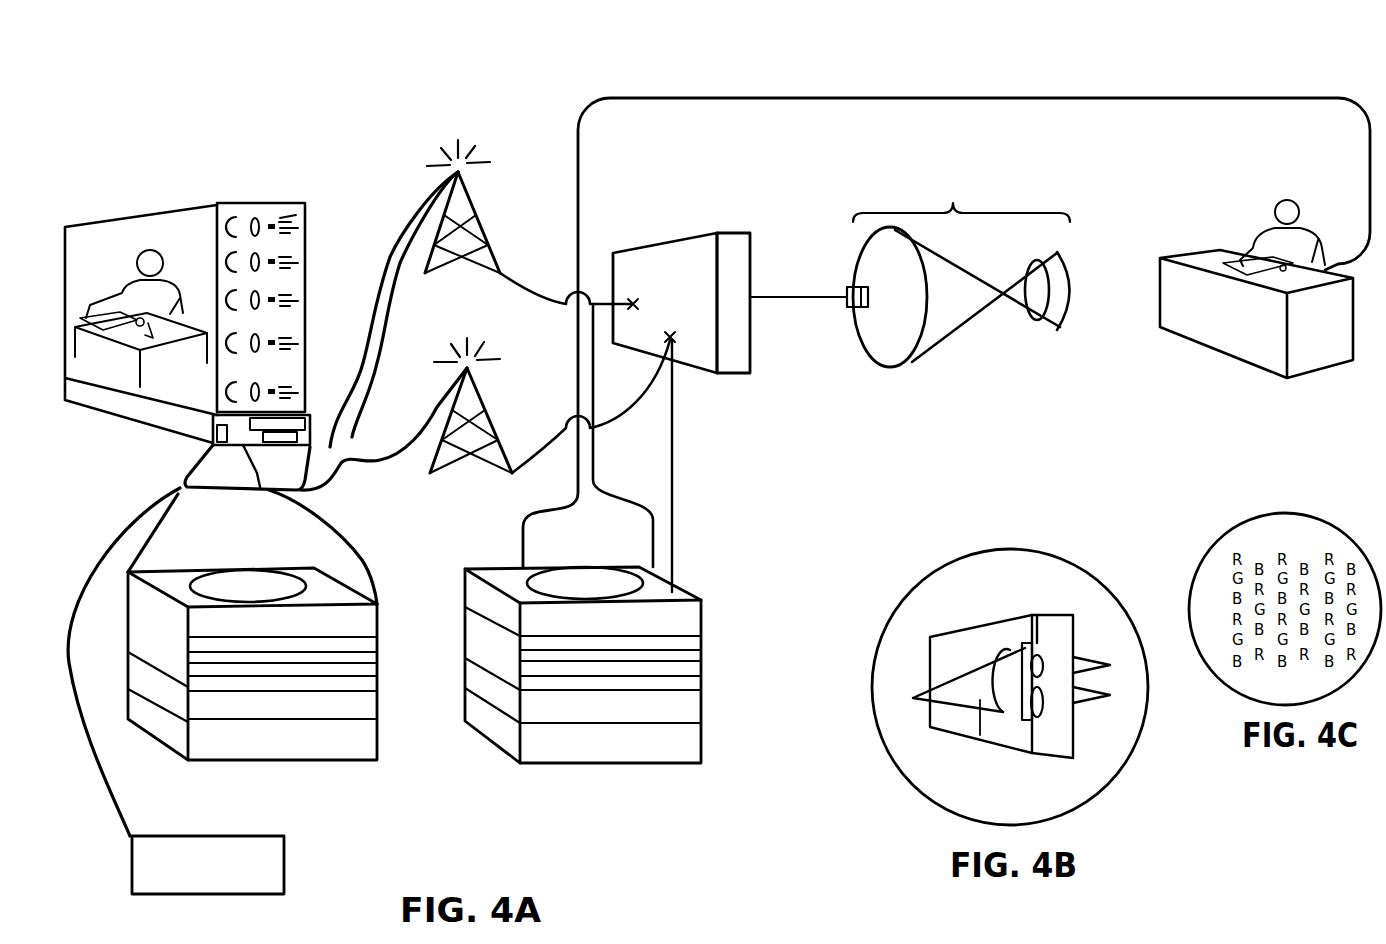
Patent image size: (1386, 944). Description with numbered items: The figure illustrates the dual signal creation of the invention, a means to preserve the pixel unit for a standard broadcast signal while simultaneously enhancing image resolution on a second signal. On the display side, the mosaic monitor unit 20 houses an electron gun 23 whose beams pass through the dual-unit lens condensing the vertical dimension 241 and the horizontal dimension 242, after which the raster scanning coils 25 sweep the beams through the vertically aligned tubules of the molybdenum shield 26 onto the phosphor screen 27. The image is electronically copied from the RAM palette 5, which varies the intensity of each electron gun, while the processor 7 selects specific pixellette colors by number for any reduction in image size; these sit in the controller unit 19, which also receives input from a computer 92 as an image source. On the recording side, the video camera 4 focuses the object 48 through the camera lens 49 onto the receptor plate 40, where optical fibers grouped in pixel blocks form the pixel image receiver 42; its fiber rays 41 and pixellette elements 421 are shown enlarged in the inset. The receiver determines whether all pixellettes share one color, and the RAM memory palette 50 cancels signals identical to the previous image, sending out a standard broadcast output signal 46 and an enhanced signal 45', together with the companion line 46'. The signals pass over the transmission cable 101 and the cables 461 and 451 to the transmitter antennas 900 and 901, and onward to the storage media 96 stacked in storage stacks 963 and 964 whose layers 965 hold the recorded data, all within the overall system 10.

In FIG. 4A, the holographic video system 10 is at (1055, 98).
In FIG. 4A, the display device 20 is at (180, 227).
In FIG. 4A, the phosphor screen 27 is at (210, 223).
In FIG. 4A, the molybdenum shield 26 is at (230, 208).
In FIG. 4A, the raster scanning coils 25 is at (255, 215).
In FIG. 4A, the vertical dimension 241 is at (270, 220).
In FIG. 4A, the horizontal dimension 242 is at (297, 215).
In FIG. 4A, the electron gun 23 is at (305, 215).
In FIG. 4A, the controller unit 19 is at (213, 428).
In FIG. 4A, the RAM palette 5 is at (298, 420).
In FIG. 4A, the processor 7 is at (293, 432).
In FIG. 4A, the transmission cable 101 is at (382, 277).
In FIG. 4A, the cable to transmitter 900 461 is at (402, 308).
In FIG. 4A, the cable to transmitter 901 451 is at (410, 437).
In FIG. 4A, the transmitter antenna 900 is at (482, 227).
In FIG. 4A, the transmitter antenna 901 is at (483, 423).
In FIG. 4A, the received signal line 46' is at (569, 300).
In FIG. 4A, the received signal line 45' is at (632, 462).
In FIG. 4A, the standard broadcast output signal 46 is at (623, 435).
In FIG. 4A, the RAM memory palette 50 is at (690, 260).
In FIG. 4A, the video camera 4 is at (961, 200).
In FIG. 4A, the pixel image receiver 42 is at (848, 292).
In FIG. 4B, the pixel image receiver 42 is at (963, 628).
In FIG. 4A, the receptor plate 40 is at (873, 263).
In FIG. 4A, the camera lens 49 is at (1037, 285).
In FIG. 4A, the object 48 is at (1273, 237).
In FIG. 4A, the storage medium 96 is at (236, 581).
In FIG. 4A, the storage stack 963 is at (347, 624).
In FIG. 4A, the storage stack 964 is at (681, 614).
In FIG. 4A, the storage layers 965 is at (336, 654).
In FIG. 4A, the computer 92 is at (208, 865).
In FIG. 4B, the light rays 41 is at (1080, 707).
In FIG. 4B, the light source elements 421 is at (1043, 713).